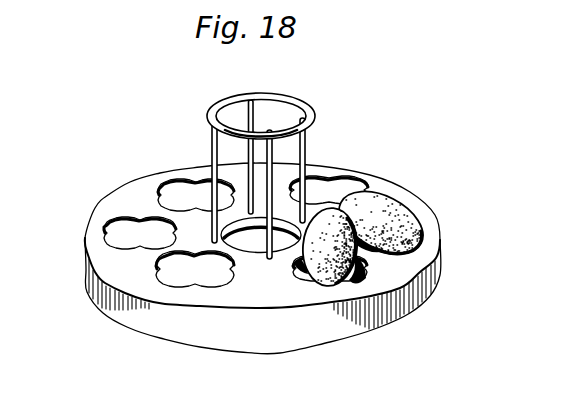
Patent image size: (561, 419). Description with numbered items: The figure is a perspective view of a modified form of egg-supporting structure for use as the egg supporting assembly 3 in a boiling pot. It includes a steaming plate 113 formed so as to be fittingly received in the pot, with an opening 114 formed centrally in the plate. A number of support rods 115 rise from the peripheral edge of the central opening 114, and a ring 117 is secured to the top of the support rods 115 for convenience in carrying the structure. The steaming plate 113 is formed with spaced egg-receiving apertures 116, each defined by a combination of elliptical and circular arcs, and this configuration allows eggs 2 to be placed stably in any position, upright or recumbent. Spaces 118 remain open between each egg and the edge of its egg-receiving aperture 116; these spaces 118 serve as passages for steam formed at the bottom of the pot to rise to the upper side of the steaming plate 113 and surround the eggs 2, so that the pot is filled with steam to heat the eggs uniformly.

The eggs 2 is at (393, 205).
The egg supporting assembly 3 is at (440, 268).
The steaming plate 113 is at (264, 302).
The opening 114 is at (248, 247).
The support rods 115 is at (306, 150).
The egg-receiving apertures 116 is at (105, 236).
The ring 117 is at (289, 95).
The spaces 118 is at (299, 270).